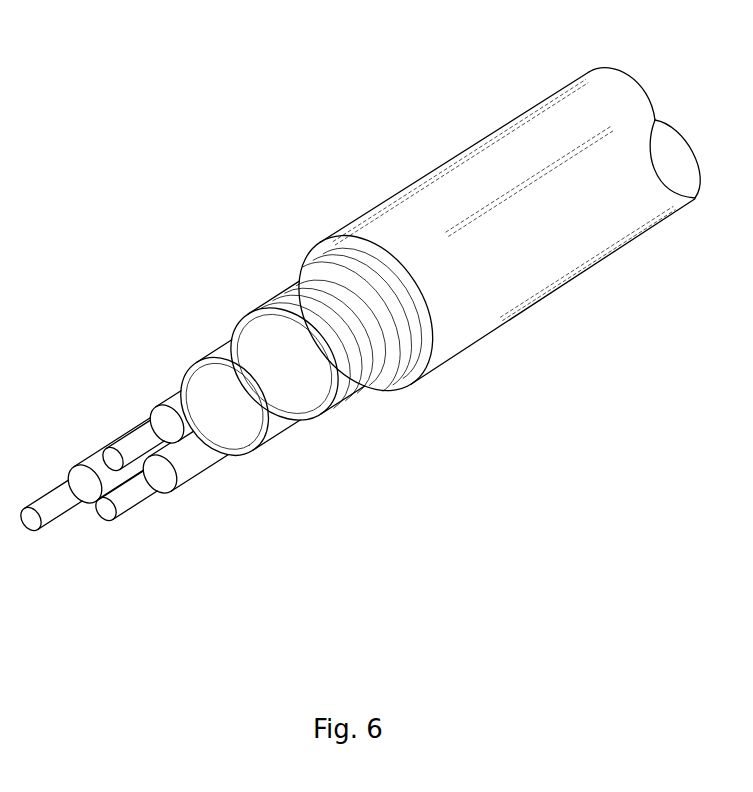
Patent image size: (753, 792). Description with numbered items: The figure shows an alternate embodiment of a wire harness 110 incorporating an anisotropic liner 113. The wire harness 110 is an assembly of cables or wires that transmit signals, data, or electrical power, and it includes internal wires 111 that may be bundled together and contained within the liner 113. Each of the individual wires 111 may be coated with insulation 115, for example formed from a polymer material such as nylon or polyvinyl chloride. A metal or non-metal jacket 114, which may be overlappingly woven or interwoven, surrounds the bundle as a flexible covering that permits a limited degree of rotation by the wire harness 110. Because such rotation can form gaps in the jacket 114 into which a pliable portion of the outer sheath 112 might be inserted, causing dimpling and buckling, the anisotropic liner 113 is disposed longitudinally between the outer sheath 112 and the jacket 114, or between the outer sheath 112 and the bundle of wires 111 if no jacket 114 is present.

The wire harness 110 is at (275, 94).
The internal wires 111 is at (107, 447).
The outer sheath 112 is at (485, 298).
The anisotropic liner 113 is at (296, 424).
The jacket 114 is at (294, 284).
The insulation 115 is at (175, 393).